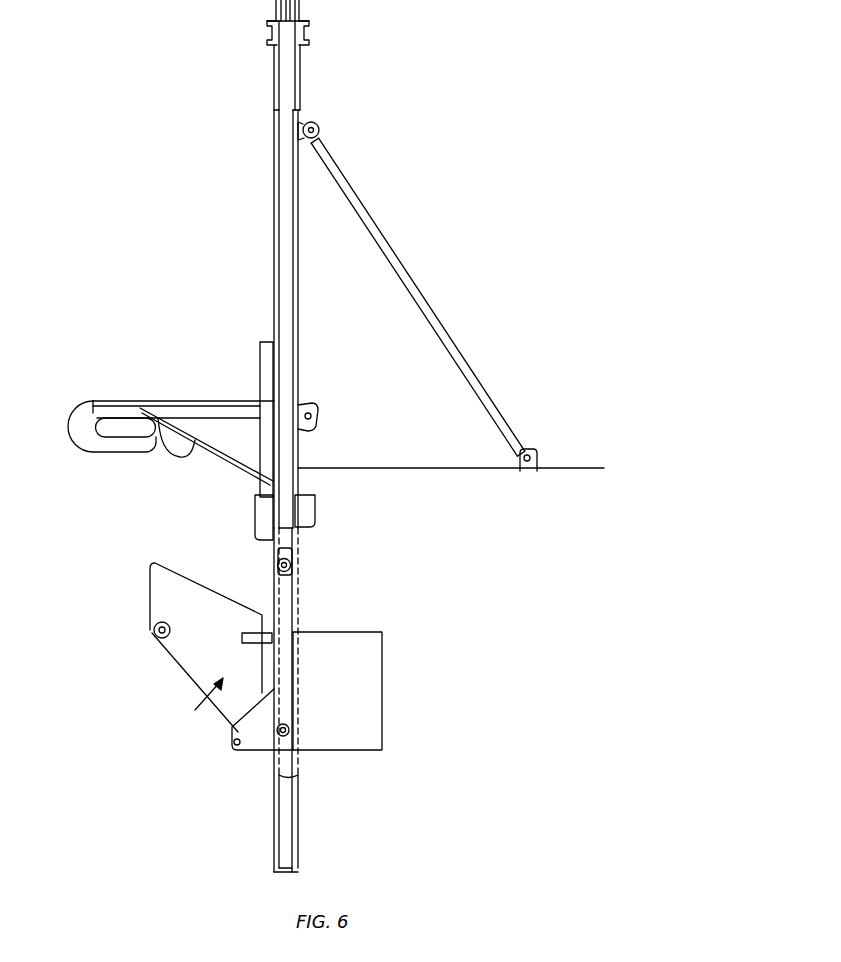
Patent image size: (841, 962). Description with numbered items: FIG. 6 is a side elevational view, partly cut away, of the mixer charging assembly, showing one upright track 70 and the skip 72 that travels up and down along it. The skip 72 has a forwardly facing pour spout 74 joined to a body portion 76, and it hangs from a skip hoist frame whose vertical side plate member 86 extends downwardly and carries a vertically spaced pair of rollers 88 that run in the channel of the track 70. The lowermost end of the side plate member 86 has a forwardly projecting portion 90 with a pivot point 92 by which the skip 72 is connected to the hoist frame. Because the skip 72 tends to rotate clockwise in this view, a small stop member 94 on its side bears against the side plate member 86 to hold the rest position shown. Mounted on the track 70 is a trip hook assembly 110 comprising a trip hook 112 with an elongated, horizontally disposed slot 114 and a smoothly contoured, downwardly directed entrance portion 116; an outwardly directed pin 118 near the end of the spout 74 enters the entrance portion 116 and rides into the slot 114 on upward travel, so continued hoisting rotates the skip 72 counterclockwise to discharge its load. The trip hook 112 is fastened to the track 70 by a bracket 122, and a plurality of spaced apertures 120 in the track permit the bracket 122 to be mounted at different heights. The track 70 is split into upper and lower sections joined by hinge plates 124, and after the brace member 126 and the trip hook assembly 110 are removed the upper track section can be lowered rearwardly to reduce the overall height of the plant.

The upright track 70 is at (283, 313).
The skip 72 is at (188, 722).
The pour spout 74 is at (210, 597).
The body portion 76 is at (365, 680).
The vertical side plate member 86 is at (285, 609).
The rollers 88 is at (292, 574).
The forwardly projecting portion 90 is at (253, 740).
The pivot point 92 is at (232, 741).
The stop member 94 is at (253, 635).
The trip hook assembly 110 is at (129, 418).
The trip hook 112 is at (85, 437).
The elongated slot 114 is at (125, 428).
The entrance portion 116 is at (176, 456).
The pin 118 is at (153, 634).
The spaced apertures 120 is at (278, 381).
The bracket 122 is at (245, 400).
The hinge plate 124 is at (310, 427).
The brace member 126 is at (468, 368).